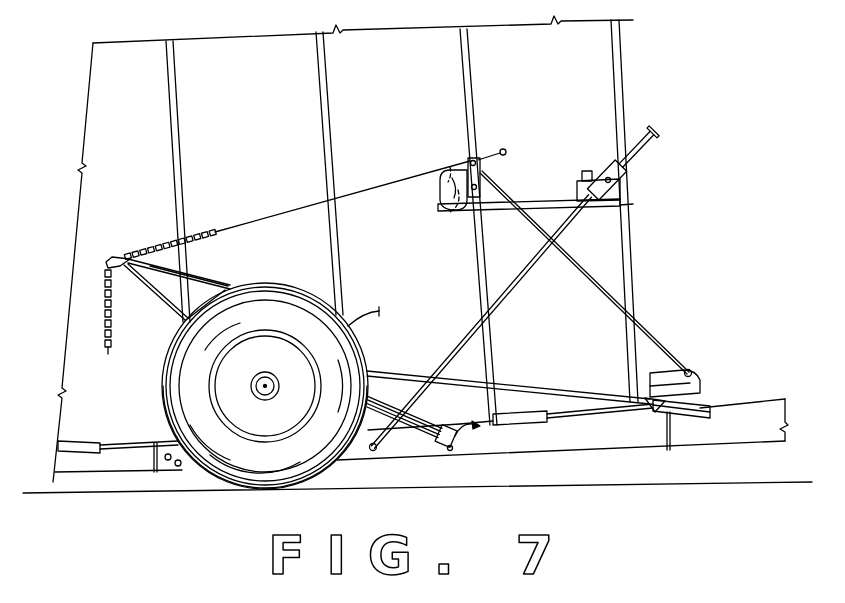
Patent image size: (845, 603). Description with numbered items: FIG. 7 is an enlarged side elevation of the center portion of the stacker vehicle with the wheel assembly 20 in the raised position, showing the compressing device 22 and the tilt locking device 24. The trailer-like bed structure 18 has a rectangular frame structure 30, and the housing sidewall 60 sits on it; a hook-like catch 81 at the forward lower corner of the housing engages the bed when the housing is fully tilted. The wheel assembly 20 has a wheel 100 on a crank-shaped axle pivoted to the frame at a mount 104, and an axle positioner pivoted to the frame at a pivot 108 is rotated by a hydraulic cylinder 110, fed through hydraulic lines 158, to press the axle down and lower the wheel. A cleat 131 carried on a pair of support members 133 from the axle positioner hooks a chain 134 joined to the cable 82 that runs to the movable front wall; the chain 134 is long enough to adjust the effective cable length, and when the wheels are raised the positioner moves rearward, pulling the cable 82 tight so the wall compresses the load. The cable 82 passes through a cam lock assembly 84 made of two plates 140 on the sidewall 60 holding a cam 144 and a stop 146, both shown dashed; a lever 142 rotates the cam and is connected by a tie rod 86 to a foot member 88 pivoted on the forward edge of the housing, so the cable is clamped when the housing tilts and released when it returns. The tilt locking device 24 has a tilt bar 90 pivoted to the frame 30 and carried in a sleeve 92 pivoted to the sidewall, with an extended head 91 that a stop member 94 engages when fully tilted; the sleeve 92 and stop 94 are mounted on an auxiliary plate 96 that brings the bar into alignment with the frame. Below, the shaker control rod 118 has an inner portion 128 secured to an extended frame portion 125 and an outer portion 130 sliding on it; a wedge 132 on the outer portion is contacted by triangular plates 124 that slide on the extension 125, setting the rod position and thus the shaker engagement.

The stacker vehicle bed structure 18 is at (797, 397).
The wheel assembly 20 is at (238, 496).
The compressing device 22 is at (64, 226).
The tilt locking device 24 is at (672, 160).
The rectangular frame structure 30 is at (67, 458).
The sidewall 60 is at (100, 93).
The hook-like catch 81 is at (657, 377).
The cable 82 is at (343, 198).
The cam lock assembly 84 is at (432, 166).
The tie rod 86 is at (575, 262).
The foot member 88 is at (691, 369).
The tilt bar 90 is at (533, 272).
The extended head 91 is at (656, 134).
The sleeve 92 is at (602, 176).
The stop member 94 is at (583, 170).
The auxiliary plate 96 is at (577, 188).
The wheel 100 is at (190, 374).
The axle pivot mount 104 is at (178, 466).
The axle positioner pivot 108 is at (167, 454).
The hydraulic cylinder 110 is at (383, 383).
The control rod 118 is at (504, 379).
The triangular plates 124 is at (668, 450).
The extended portion of the frame structure 125 is at (718, 399).
The inner portion of the control rod 128 is at (693, 397).
The outer portion of the control rod 130 is at (597, 369).
The cleat 131 is at (122, 256).
The wedge 132 is at (643, 412).
The support members 133 is at (200, 282).
The chain 134 is at (202, 232).
The plates 140 is at (440, 193).
The lever 142 is at (476, 158).
The cam 144 is at (452, 212).
The stop 146 is at (450, 165).
The hydraulic lines 158 is at (375, 312).